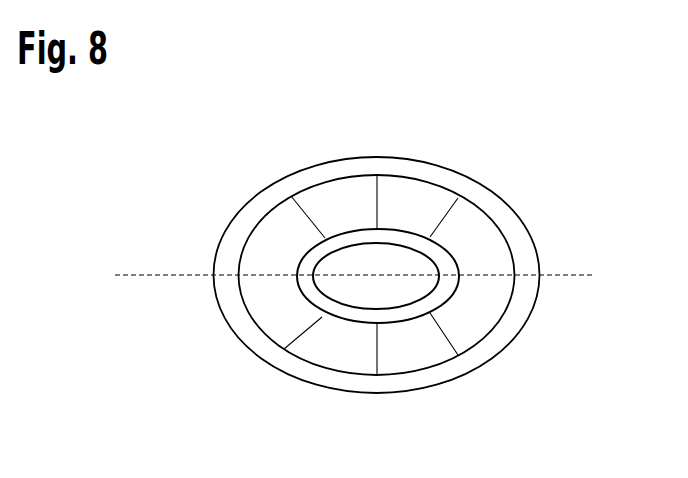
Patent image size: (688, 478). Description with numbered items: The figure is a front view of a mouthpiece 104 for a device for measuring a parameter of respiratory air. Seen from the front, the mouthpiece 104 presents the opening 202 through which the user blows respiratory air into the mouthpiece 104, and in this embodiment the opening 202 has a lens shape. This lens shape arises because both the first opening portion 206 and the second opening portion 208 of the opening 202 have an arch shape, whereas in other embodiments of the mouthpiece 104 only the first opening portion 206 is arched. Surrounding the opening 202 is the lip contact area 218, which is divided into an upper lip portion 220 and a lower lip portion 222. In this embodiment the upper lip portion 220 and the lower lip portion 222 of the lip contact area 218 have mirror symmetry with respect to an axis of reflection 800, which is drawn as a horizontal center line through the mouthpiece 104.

The mouthpiece 104 is at (200, 220).
The opening 202 is at (397, 253).
The first opening portion 206 is at (305, 237).
The second opening portion 208 is at (298, 313).
The lip contact area 218 is at (420, 362).
The upper lip portion 220 is at (345, 190).
The lower lip portion 222 is at (335, 352).
The axis of reflection 800 is at (587, 277).